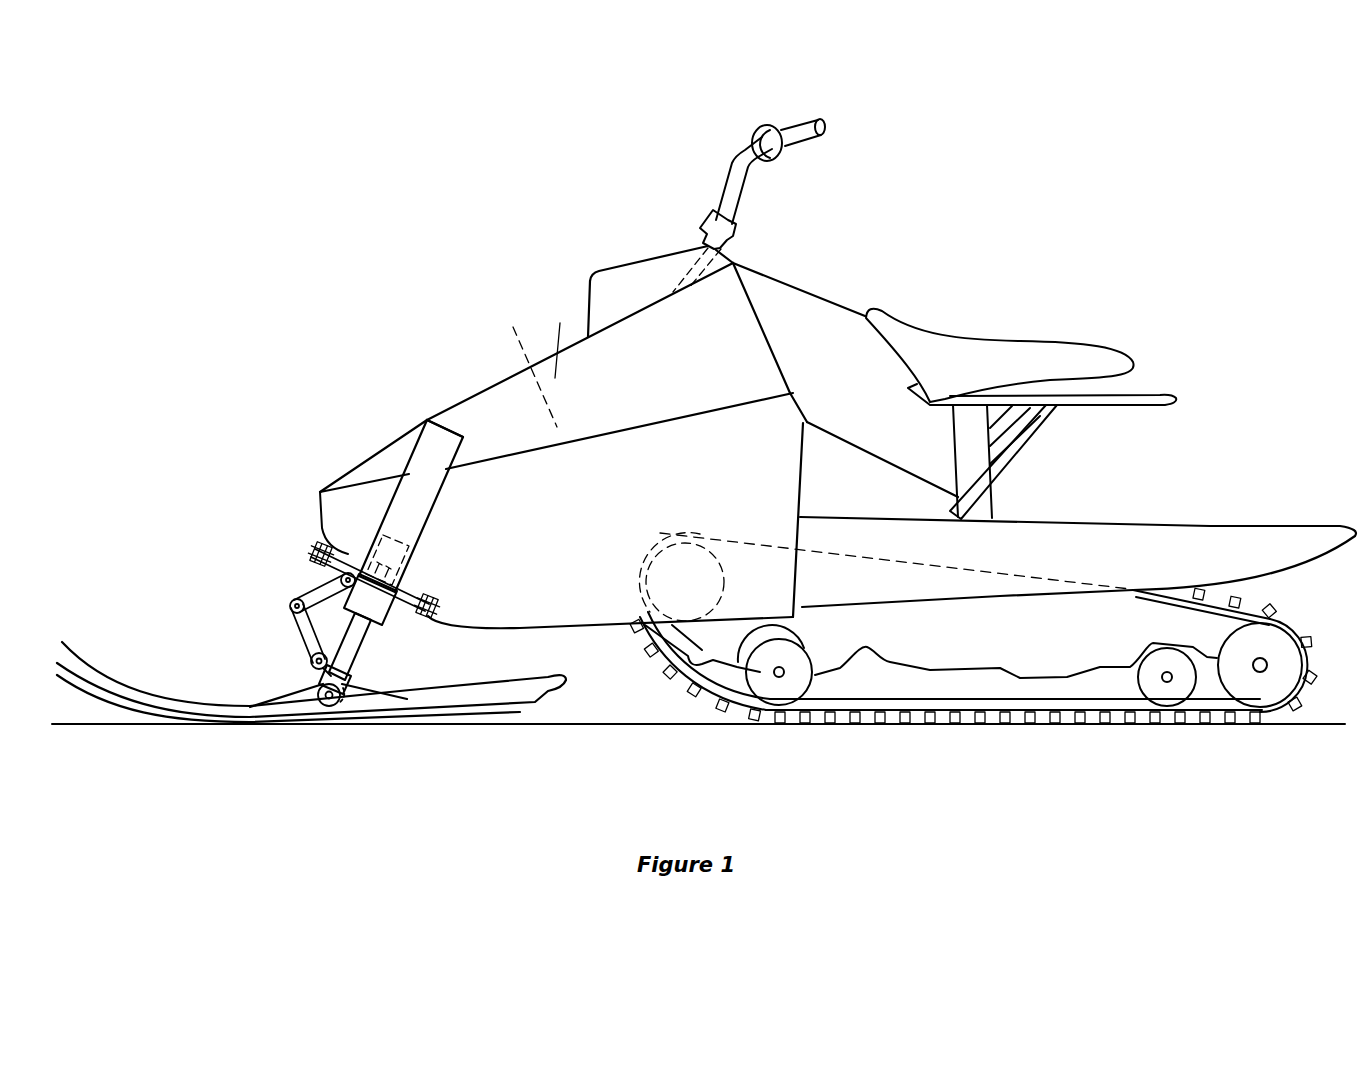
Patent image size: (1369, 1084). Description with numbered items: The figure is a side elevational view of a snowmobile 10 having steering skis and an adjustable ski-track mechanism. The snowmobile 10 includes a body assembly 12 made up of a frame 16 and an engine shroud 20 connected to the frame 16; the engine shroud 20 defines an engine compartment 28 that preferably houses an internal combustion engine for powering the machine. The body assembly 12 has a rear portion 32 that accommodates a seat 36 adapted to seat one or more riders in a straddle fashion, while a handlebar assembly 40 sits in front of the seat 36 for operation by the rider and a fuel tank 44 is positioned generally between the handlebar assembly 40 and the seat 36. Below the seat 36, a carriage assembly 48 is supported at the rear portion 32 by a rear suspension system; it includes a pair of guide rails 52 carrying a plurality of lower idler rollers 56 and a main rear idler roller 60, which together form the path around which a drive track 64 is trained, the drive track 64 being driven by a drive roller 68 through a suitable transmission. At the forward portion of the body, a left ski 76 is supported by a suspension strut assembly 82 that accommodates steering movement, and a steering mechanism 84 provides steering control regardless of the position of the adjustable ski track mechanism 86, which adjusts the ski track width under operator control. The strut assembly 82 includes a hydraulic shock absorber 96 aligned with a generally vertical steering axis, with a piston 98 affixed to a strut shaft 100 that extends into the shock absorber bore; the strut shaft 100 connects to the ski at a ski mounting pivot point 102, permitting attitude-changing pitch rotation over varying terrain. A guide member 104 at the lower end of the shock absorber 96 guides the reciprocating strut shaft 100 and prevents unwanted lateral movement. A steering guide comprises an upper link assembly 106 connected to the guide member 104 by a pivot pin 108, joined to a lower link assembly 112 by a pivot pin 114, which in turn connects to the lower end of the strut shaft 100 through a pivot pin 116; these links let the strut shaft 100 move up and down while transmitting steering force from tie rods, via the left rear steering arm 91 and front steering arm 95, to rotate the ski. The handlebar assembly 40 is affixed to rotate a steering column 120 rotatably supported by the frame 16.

The snowmobile 10 is at (502, 229).
The body assembly 12 is at (463, 366).
The frame 16 is at (1154, 522).
The engine shroud 20 is at (555, 336).
The engine compartment 28 is at (527, 360).
The rear portion 32 is at (1190, 338).
The seat 36 is at (1019, 337).
The handlebar assembly 40 is at (822, 128).
The fuel tank 44 is at (803, 313).
The carriage assembly 48 is at (961, 733).
The guide rails 52 is at (1070, 690).
The lower idler rollers 56 is at (783, 692).
The main rear idler roller 60 is at (1240, 692).
The drive track 64 is at (883, 716).
The drive roller 68 is at (723, 570).
The left ski 76 is at (198, 730).
The suspension strut assemblies 82 is at (420, 413).
The steering mechanism 84 is at (360, 530).
The adjustable ski track mechanism 86 is at (425, 576).
The left rear steering arm 91 is at (416, 594).
The front steering arm 95 is at (343, 552).
The hydraulic shock absorber 96 is at (466, 447).
The piston 98 is at (423, 545).
The strut shaft 100 is at (360, 645).
The ski mounting pivot point 102 is at (310, 695).
The guide member 104 is at (392, 607).
The upper link assembly 106 is at (304, 592).
The pivot pin 108 is at (311, 578).
The lower link assembly 112 is at (297, 630).
The pivot pin 114 is at (288, 605).
The pivot pin 116 is at (309, 667).
The steering column 120 is at (705, 240).